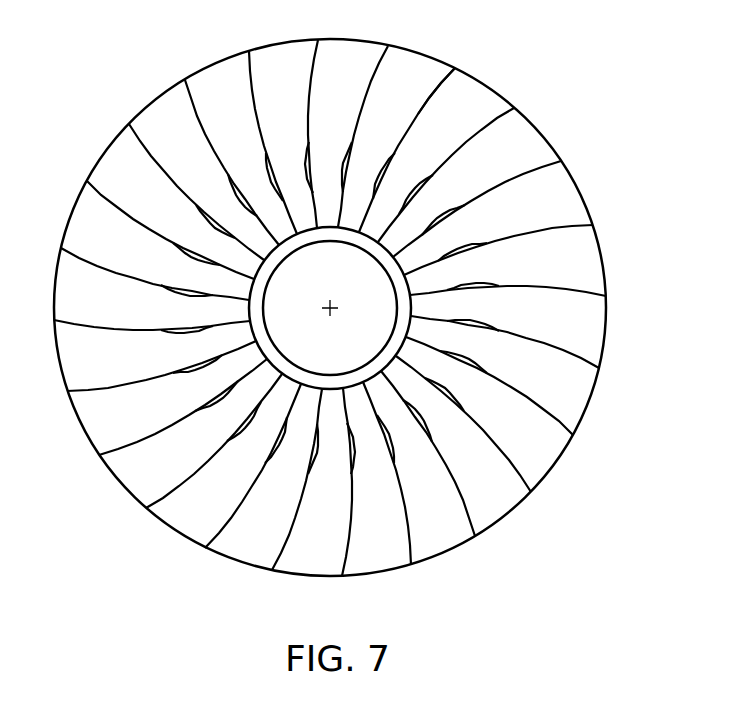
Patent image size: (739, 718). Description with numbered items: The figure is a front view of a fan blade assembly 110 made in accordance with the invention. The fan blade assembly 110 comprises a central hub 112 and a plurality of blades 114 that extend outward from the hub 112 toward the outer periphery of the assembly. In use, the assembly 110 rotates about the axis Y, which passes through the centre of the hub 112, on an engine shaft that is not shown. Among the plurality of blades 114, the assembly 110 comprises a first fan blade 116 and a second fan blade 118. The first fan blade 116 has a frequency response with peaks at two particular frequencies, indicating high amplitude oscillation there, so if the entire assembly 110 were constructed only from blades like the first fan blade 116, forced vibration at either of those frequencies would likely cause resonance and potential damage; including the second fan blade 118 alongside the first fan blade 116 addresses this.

The fan blade assembly 110 is at (605, 117).
The hub 112 is at (407, 304).
The blades 114 is at (543, 452).
The first fan blade 116 is at (403, 72).
The second fan blade 118 is at (473, 100).
The axis Y is at (330, 308).